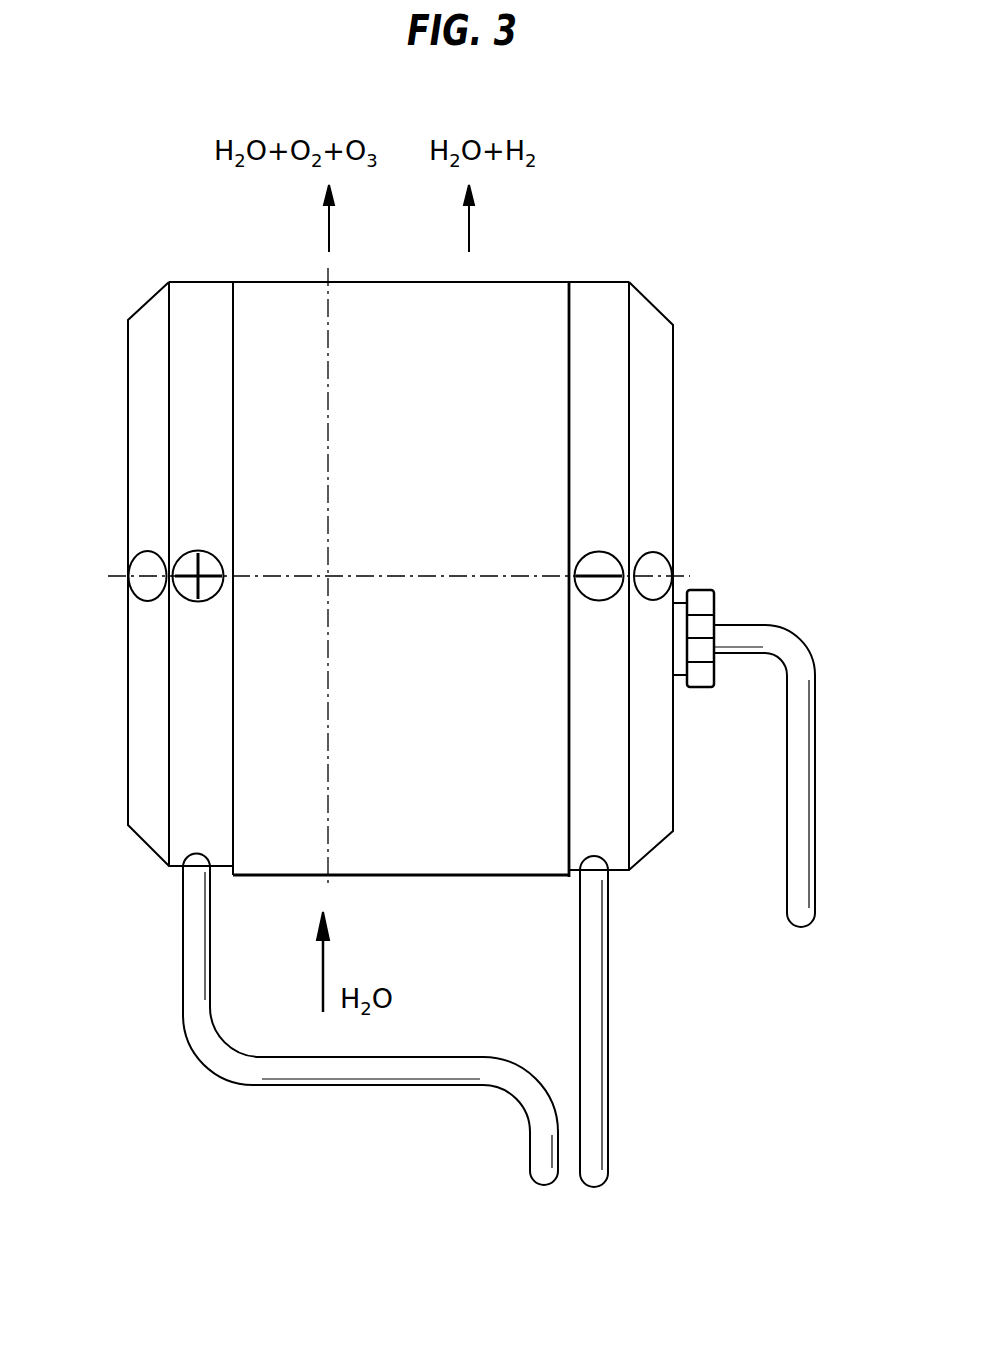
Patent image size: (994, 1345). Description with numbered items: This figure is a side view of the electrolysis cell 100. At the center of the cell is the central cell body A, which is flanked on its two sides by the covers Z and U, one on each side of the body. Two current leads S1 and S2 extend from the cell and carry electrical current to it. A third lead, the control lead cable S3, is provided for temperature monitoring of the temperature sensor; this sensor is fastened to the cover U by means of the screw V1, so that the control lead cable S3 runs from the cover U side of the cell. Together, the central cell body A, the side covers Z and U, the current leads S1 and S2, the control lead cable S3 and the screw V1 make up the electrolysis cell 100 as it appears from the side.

The electrolysis cell 100 is at (600, 281).
The central cell body A is at (513, 312).
The cover U is at (655, 473).
The cover Z is at (138, 779).
The screw V1 is at (690, 594).
The current lead S1 is at (432, 1086).
The current lead S2 is at (600, 1075).
The control lead cable S3 is at (797, 790).